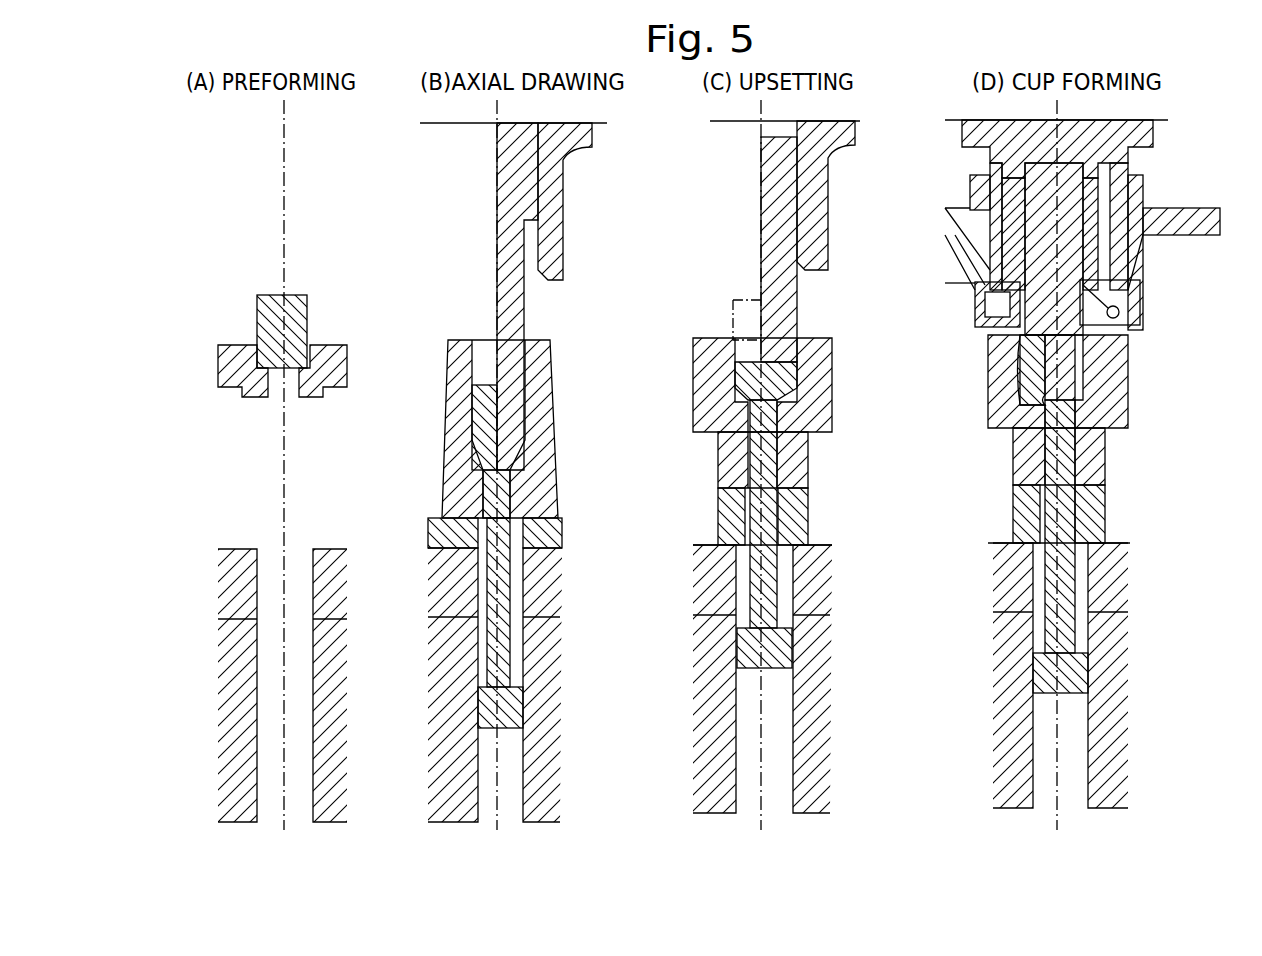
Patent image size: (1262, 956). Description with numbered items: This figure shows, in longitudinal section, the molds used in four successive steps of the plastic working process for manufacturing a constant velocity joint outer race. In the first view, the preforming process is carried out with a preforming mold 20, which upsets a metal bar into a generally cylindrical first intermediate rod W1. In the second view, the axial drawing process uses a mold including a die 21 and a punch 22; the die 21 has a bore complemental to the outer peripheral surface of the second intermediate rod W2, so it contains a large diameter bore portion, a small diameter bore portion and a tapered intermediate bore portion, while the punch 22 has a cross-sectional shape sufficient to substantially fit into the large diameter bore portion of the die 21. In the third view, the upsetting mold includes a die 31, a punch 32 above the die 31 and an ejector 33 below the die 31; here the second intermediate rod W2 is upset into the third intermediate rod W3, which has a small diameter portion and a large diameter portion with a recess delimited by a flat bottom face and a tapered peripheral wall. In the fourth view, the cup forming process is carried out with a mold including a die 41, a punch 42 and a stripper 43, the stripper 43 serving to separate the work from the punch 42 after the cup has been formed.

The first intermediate rod W1 is at (262, 313).
The preforming mold 20 is at (230, 378).
The die 21 is at (445, 468).
The punch 22 is at (525, 336).
The second intermediate rod W2 is at (520, 425).
The die 31 is at (700, 410).
The punch 32 is at (800, 330).
The ejector 33 is at (795, 580).
The third intermediate rod W3 is at (805, 378).
The die 41 is at (992, 408).
The punch 42 is at (1143, 185).
The stripper 43 is at (1018, 343).